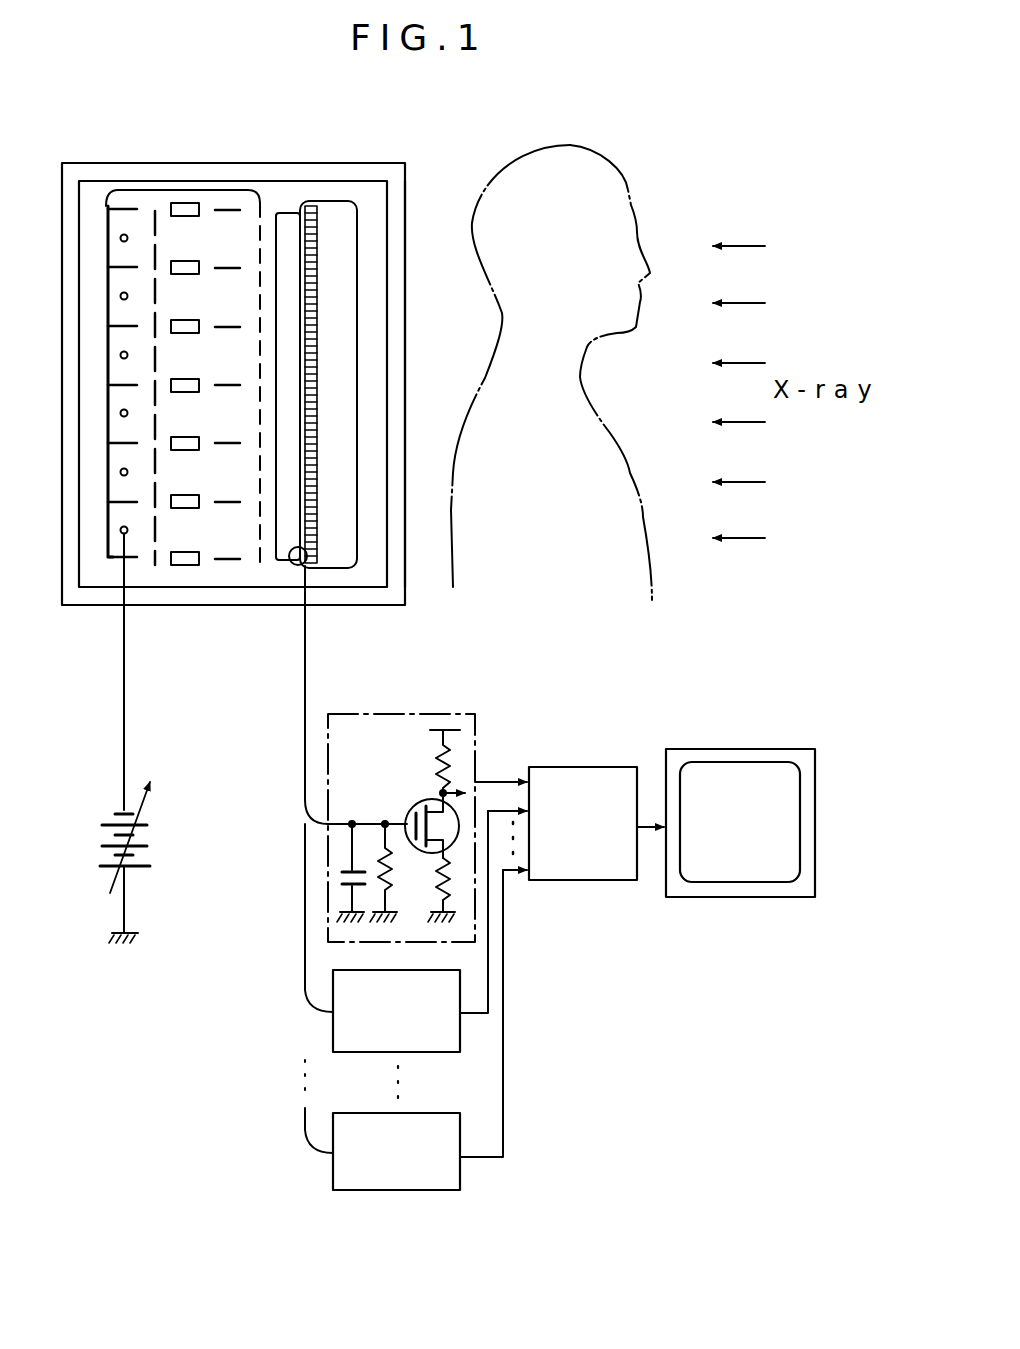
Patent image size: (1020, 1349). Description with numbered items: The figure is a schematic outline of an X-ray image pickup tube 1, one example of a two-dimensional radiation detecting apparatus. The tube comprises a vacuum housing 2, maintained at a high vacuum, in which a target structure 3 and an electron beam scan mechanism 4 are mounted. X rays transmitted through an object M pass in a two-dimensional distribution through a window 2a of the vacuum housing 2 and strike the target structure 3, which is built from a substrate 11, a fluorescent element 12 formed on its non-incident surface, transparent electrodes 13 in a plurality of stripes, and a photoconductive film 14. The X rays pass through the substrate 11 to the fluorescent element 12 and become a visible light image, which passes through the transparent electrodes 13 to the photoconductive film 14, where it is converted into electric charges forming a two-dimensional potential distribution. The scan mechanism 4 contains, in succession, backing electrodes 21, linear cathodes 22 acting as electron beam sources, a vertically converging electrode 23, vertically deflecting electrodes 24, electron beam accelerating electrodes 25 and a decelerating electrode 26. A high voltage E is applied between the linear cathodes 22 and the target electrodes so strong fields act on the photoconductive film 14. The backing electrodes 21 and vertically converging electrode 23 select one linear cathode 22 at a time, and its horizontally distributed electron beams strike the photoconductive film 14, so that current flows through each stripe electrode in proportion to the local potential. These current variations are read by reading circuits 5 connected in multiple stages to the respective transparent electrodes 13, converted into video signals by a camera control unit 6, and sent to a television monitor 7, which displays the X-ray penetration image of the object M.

The X-ray image pickup tube 1 is at (256, 134).
The vacuum housing 2 is at (64, 275).
The window 2a is at (406, 306).
The target structure 3 is at (335, 198).
The electron beam scan mechanism 4 is at (183, 186).
The reading circuit 5 is at (477, 739).
The camera control unit 6 is at (585, 881).
The television monitor 7 is at (745, 898).
The substrate 11 is at (318, 536).
The fluorescent element 12 is at (357, 521).
The transparent electrodes 13 is at (301, 562).
The photoconductive film 14 is at (278, 562).
The backing electrodes 21 is at (110, 558).
The linear cathodes 22 is at (127, 533).
The vertically converging electrode 23 is at (155, 566).
The vertically deflecting electrodes 24 is at (191, 566).
The electron beam accelerating electrodes 25 is at (225, 566).
The decelerating electrode 26 is at (260, 567).
The high voltage E is at (109, 738).
The object M is at (603, 153).